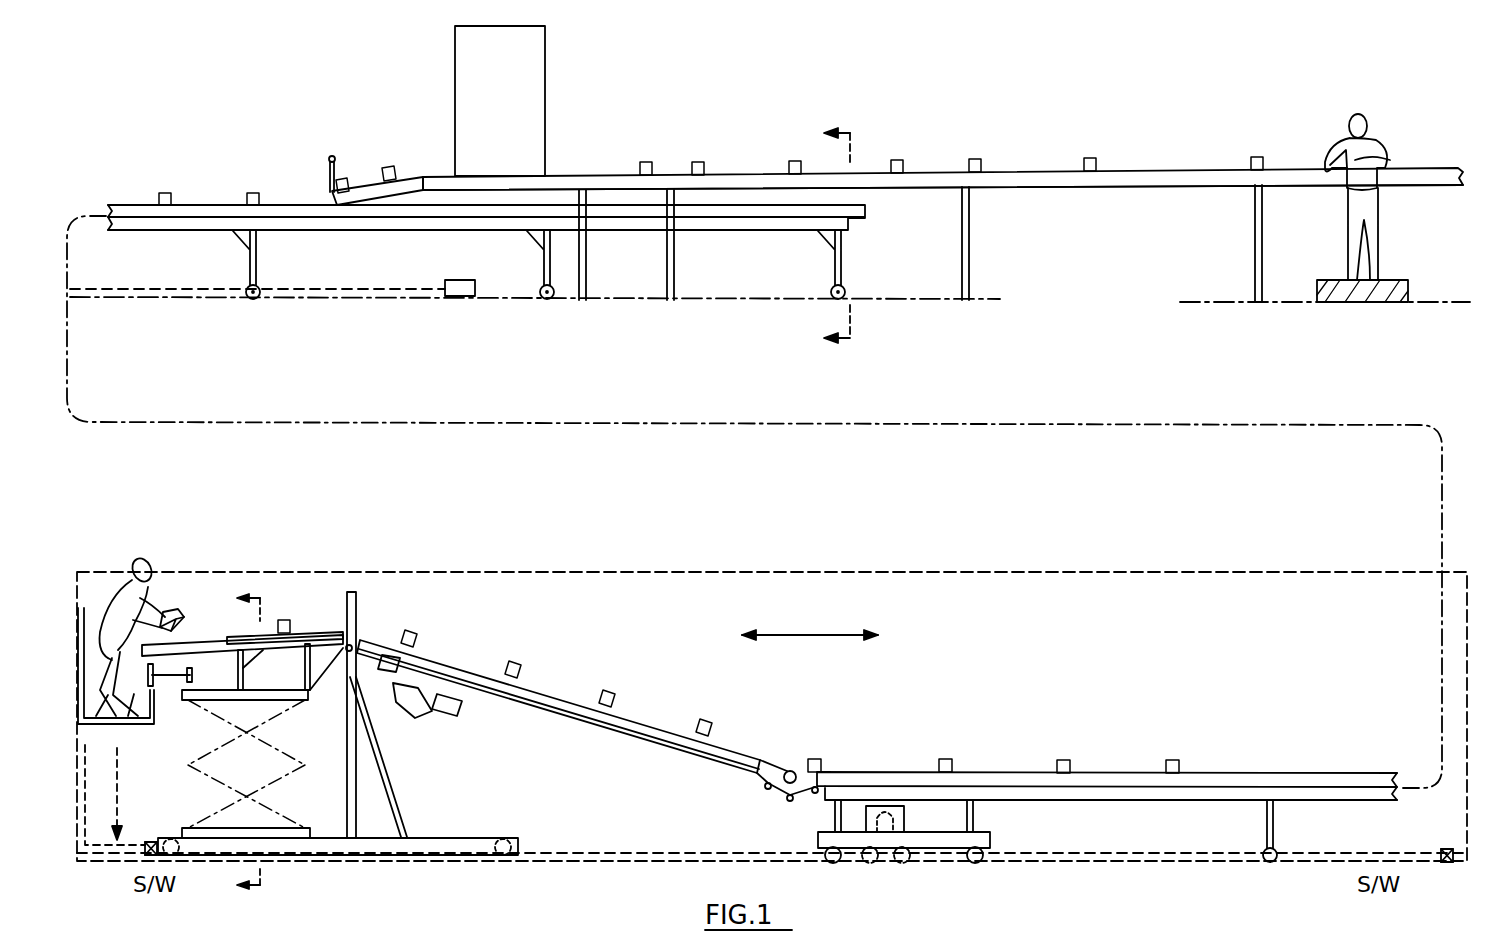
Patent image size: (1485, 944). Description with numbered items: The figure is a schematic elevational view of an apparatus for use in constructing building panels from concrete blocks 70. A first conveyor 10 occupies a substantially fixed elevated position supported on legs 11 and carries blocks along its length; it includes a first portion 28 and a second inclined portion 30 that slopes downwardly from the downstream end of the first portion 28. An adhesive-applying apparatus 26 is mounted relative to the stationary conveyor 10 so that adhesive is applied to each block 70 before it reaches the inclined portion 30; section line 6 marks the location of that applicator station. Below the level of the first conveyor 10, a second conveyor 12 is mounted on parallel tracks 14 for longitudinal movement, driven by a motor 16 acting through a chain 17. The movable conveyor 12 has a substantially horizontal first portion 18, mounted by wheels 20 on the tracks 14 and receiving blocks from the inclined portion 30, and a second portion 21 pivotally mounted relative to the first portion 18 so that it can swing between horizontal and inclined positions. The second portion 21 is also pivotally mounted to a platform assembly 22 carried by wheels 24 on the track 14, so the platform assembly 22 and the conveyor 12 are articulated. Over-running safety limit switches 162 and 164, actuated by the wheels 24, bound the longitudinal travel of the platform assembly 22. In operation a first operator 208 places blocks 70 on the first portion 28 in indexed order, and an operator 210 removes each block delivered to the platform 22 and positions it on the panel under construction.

The first conveyor 10 is at (918, 176).
The legs 11 is at (1253, 292).
The second conveyor 12 is at (1253, 790).
The tracks 14 is at (410, 300).
The motor 16 is at (886, 822).
The chain 17 is at (1140, 860).
The first portion 18 is at (205, 203).
The wheels 20 is at (1270, 862).
The second portion 21 is at (556, 706).
The platform assembly 22 is at (331, 828).
The wheels 24 is at (174, 856).
The adhesive-applying apparatus 26 is at (538, 152).
The first portion 28 is at (729, 180).
The second inclined portion 30 is at (378, 191).
The section line 6- 6 is at (835, 237).
The concrete block 70 is at (1064, 762).
The over-running safety limit switch 162 is at (143, 850).
The over-running safety limit switch 164 is at (1447, 862).
The first operator 208 is at (1383, 162).
The operator 210 is at (126, 590).